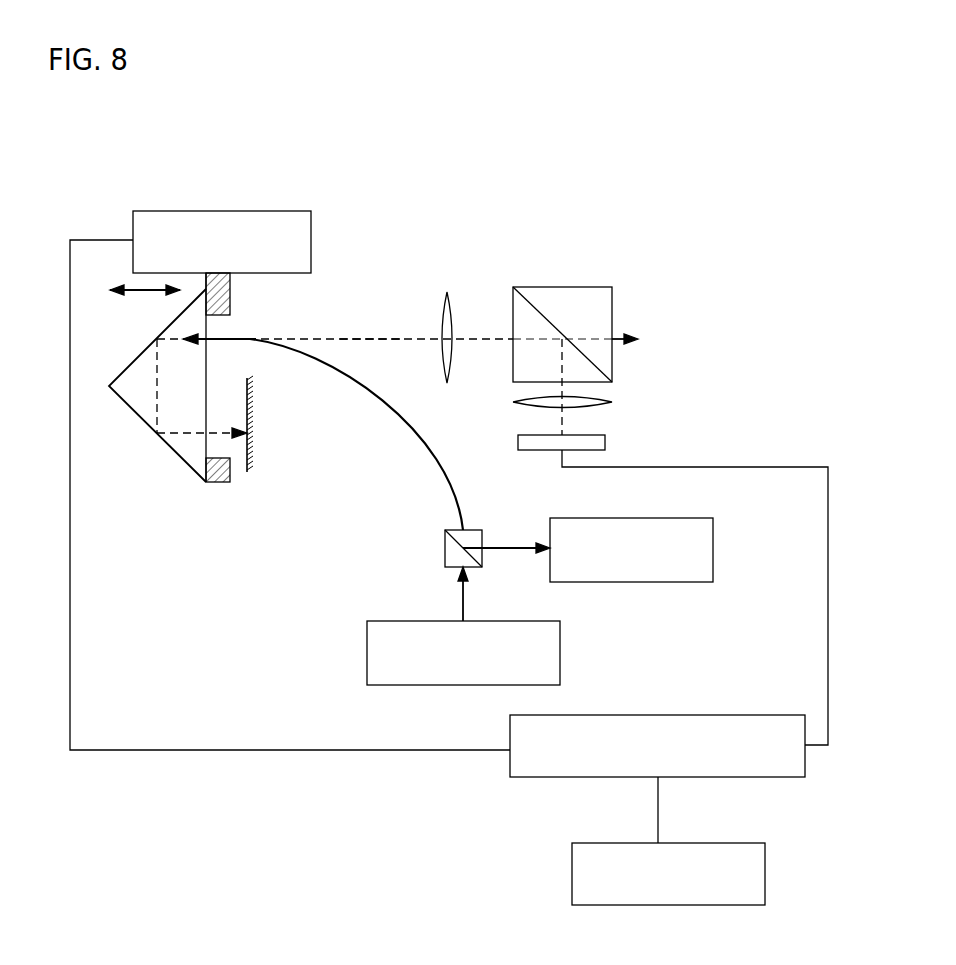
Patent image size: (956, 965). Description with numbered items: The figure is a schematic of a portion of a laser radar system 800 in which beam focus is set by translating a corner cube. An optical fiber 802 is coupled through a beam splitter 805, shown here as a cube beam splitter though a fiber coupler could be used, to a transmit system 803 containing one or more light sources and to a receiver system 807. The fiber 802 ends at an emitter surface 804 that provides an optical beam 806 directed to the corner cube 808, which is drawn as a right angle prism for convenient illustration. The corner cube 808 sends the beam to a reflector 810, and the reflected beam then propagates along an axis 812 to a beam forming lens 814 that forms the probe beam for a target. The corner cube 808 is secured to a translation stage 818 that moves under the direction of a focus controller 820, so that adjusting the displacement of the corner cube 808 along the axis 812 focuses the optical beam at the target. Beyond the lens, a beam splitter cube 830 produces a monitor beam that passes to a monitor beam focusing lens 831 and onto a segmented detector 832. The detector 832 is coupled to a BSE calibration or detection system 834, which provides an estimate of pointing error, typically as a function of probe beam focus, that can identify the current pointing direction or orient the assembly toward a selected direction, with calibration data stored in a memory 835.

The laser system 800 is at (626, 189).
The optical fiber 802 is at (402, 420).
The transmit system 803 is at (386, 620).
The emitter surface 804 is at (252, 338).
The beam splitter 805 is at (468, 530).
The optical beam 806 is at (228, 341).
The receiver system 807 is at (648, 518).
The corner cube 808 is at (178, 457).
The reflector 810 is at (250, 415).
The axis 812 is at (370, 335).
The beam forming lens 814 is at (445, 300).
The translation stage 818 is at (230, 300).
The focus controller 820 is at (195, 211).
The beam splitter cube 830 is at (543, 287).
The monitor beam focusing lens 831 is at (517, 401).
The segmented detector 832 is at (592, 433).
The BSE calibration or detection system 834 is at (585, 713).
The memory 835 is at (722, 842).